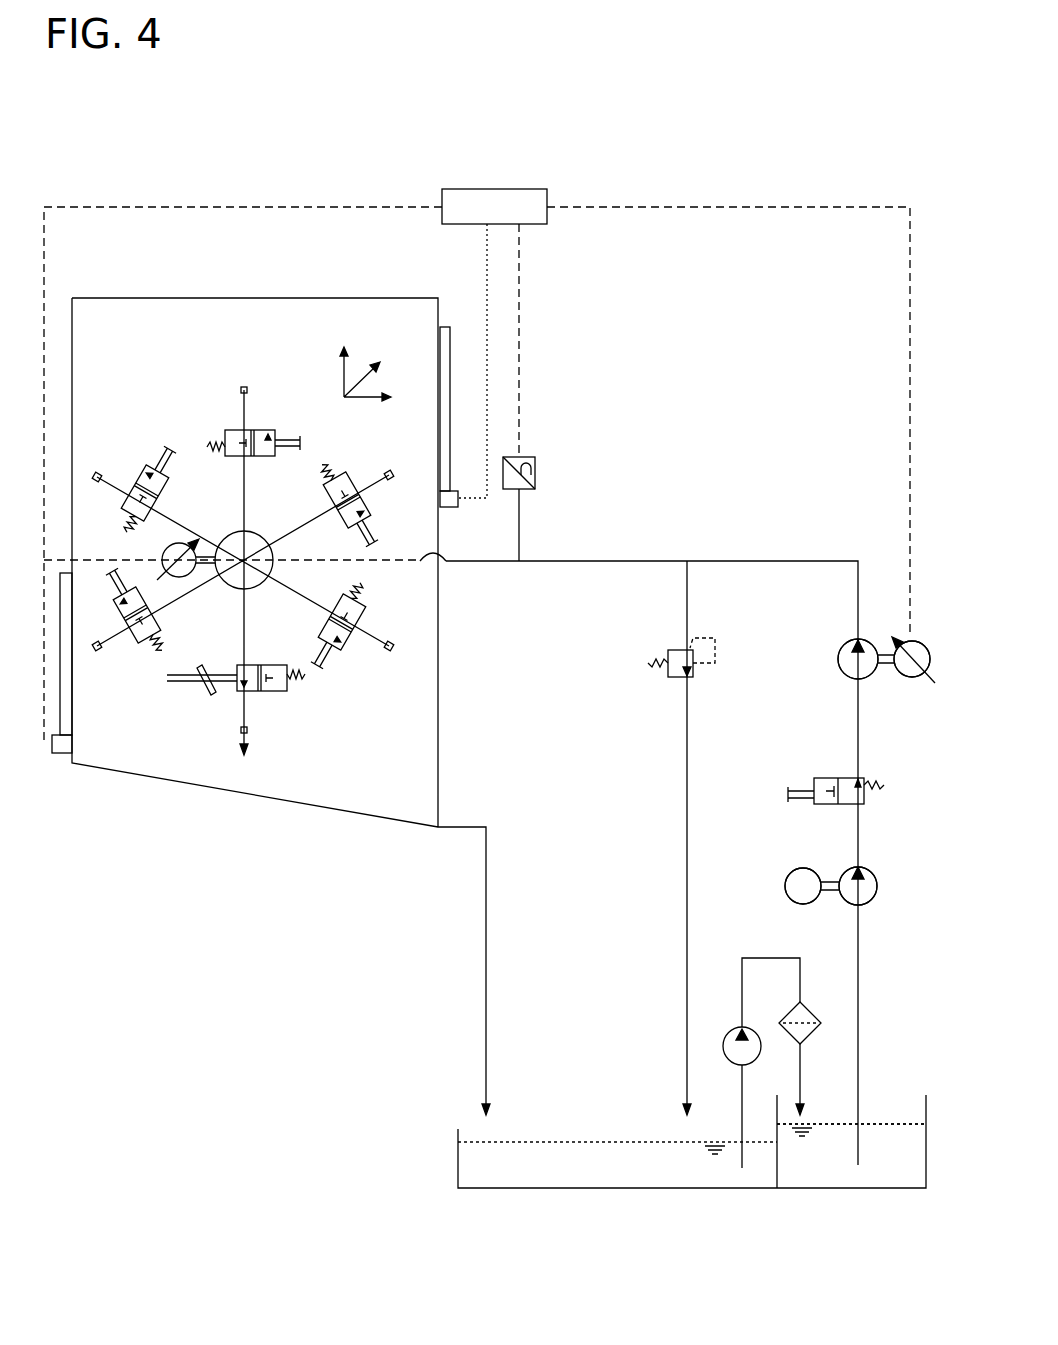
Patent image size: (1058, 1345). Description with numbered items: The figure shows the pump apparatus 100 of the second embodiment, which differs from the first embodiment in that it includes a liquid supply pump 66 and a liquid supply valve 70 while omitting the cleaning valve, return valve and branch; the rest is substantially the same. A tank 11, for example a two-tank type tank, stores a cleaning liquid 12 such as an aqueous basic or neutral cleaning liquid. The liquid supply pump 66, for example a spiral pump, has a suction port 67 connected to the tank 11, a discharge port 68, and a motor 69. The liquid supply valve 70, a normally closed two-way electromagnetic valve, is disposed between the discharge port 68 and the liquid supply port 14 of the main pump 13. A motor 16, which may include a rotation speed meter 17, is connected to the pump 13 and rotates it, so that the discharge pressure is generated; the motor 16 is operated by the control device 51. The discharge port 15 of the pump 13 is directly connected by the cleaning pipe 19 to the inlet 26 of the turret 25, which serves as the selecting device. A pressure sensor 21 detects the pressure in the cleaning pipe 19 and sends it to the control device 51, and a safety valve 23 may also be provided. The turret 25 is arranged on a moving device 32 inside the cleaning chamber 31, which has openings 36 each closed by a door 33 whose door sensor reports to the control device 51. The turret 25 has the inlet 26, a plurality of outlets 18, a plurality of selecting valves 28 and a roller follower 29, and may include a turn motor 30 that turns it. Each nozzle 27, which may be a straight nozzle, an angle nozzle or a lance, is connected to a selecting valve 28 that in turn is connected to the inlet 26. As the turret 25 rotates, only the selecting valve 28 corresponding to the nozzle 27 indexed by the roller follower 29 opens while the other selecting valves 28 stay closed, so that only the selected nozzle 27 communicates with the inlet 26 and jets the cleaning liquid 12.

The pump apparatus 100 is at (922, 161).
The control device 51 is at (497, 189).
The cleaning chamber 31 is at (400, 298).
The door 33 is at (451, 357).
The opening 36 is at (449, 422).
The moving device 32 is at (336, 392).
The turret 25 is at (164, 395).
The nozzle 27 is at (241, 390).
The outlet 18 is at (240, 428).
The selecting valve 28 is at (270, 430).
The turn motor 30 is at (160, 553).
The inlet 26 is at (422, 553).
The roller follower 29 is at (203, 690).
The cleaning pipe 19 is at (480, 563).
The pressure sensor 21 is at (537, 460).
The safety valve 23 is at (672, 681).
The discharge port 15 is at (852, 646).
The liquid supply port 14 is at (848, 677).
The pump 13 is at (866, 684).
The motor 16 is at (918, 676).
The rotation speed meter 17 is at (923, 696).
The liquid supply valve 70 is at (838, 778).
The discharge port 68 is at (852, 867).
The motor 69 is at (788, 901).
The liquid supply pump 66 is at (832, 908).
The suction port 67 is at (866, 903).
The cleaning liquid 12 is at (851, 1148).
The tank 11 is at (812, 1189).